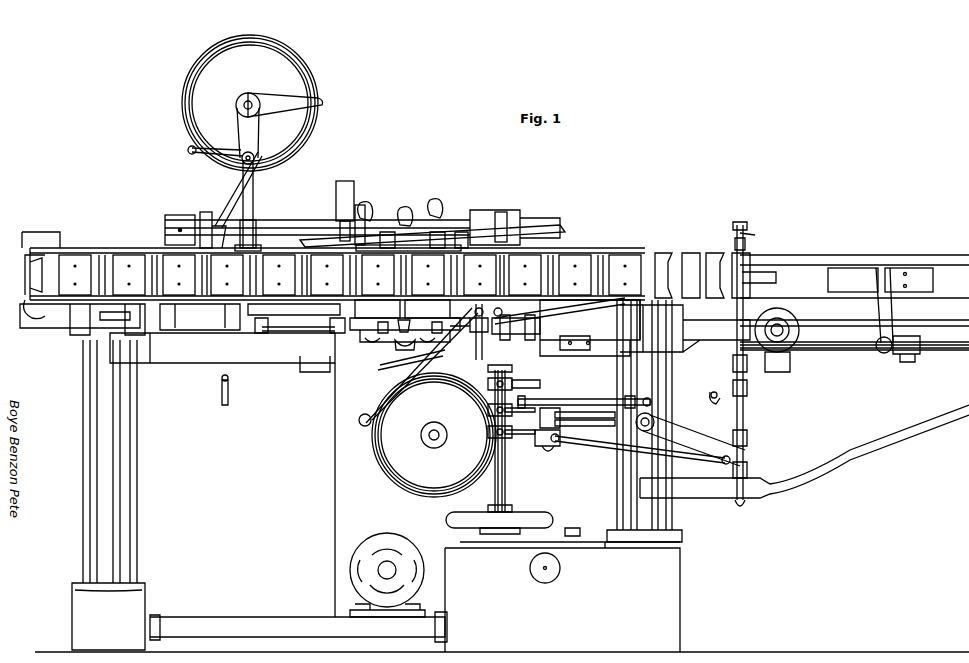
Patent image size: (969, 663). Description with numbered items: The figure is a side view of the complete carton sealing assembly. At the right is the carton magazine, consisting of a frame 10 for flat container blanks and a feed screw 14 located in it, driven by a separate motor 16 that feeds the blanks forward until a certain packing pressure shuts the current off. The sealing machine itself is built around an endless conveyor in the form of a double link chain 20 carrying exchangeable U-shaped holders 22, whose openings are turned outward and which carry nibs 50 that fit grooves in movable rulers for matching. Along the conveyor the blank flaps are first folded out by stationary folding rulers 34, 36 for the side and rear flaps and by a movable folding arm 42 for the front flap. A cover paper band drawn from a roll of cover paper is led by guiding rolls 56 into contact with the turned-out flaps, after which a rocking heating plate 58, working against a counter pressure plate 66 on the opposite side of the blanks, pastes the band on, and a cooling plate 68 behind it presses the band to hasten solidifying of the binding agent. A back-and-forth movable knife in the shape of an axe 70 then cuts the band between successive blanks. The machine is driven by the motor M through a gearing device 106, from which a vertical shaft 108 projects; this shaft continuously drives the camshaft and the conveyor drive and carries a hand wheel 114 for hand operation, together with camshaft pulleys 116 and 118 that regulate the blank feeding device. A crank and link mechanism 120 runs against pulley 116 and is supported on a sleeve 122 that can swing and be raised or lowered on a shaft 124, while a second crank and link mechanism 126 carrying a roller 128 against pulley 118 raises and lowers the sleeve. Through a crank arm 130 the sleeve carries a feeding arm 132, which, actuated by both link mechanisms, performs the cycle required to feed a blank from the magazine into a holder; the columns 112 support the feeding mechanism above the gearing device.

The frame 10 is at (790, 262).
The feed screw 14 is at (955, 350).
The motor 16 is at (785, 362).
The double link chain 20 is at (662, 270).
The holders 22 is at (90, 248).
The folding ruler 34 is at (558, 322).
The folding ruler 36 is at (552, 244).
The movable folding arm 42 is at (512, 334).
The nibs 50 is at (42, 300).
The guiding rolls 56 is at (484, 332).
The rocking heating plate 58 is at (430, 303).
The counter pressure plate 66 is at (400, 240).
The cooling plate 68 is at (380, 303).
The axe 70 is at (340, 303).
The gearing device 106 is at (660, 585).
The vertical shaft 108 is at (504, 478).
The column 112 is at (668, 508).
The hand wheel 114 is at (540, 510).
The camshaft pulley 116 is at (512, 430).
The camshaft pulley 118 is at (522, 396).
The crank and link mechanism 120 is at (552, 440).
The sleeve 122 is at (750, 412).
The shaft 124 is at (742, 380).
The crank and link mechanism 126 is at (660, 404).
The roller 128 is at (558, 400).
The crank arm 130 is at (718, 392).
The feeding arm 132 is at (712, 355).
The motor M is at (358, 562).